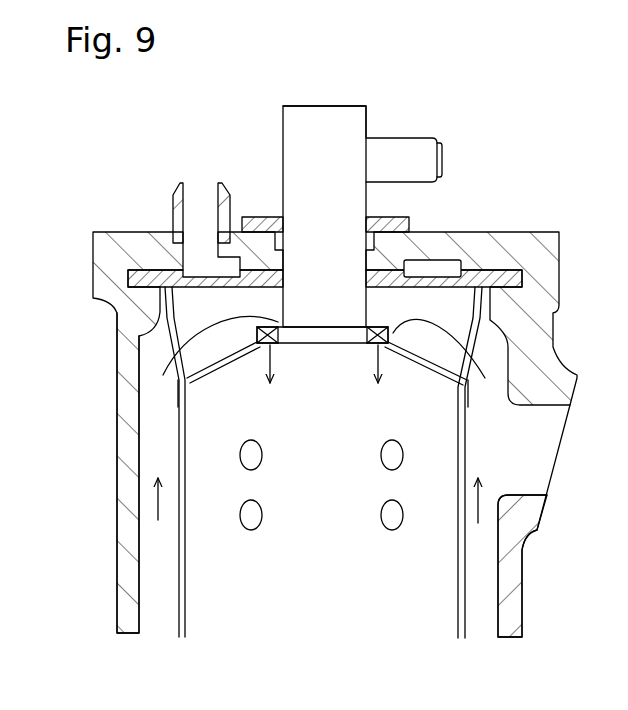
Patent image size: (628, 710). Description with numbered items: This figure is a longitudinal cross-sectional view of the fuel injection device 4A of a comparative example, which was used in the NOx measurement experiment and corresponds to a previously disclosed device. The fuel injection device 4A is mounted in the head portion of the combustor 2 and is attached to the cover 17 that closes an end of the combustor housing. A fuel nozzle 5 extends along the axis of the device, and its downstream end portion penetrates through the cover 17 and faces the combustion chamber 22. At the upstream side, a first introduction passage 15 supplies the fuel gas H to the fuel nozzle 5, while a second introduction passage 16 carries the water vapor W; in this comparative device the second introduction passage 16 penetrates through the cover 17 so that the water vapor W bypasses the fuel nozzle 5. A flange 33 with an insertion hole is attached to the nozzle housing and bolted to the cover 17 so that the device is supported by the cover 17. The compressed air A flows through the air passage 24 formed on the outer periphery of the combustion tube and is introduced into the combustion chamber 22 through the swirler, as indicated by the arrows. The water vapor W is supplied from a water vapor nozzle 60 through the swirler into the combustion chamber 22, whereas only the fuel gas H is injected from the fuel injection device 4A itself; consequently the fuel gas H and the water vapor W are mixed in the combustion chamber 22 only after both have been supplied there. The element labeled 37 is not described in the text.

The combustor 2 is at (118, 438).
The fuel injection device of comparative example 4A is at (372, 114).
The fuel nozzle 5 is at (283, 128).
The first introduction passage 15 is at (412, 150).
The second introduction passage 16 is at (202, 200).
The cover 17 is at (527, 232).
The combustion chamber 22 is at (340, 505).
The air passage 24 is at (157, 592).
The flange 33 is at (394, 218).
The seal guide plate 37 is at (417, 360).
The water vapor nozzle 60 is at (240, 288).
The compressed air A is at (157, 503).
The water vapor W is at (202, 173).
The fuel gas H is at (453, 159).